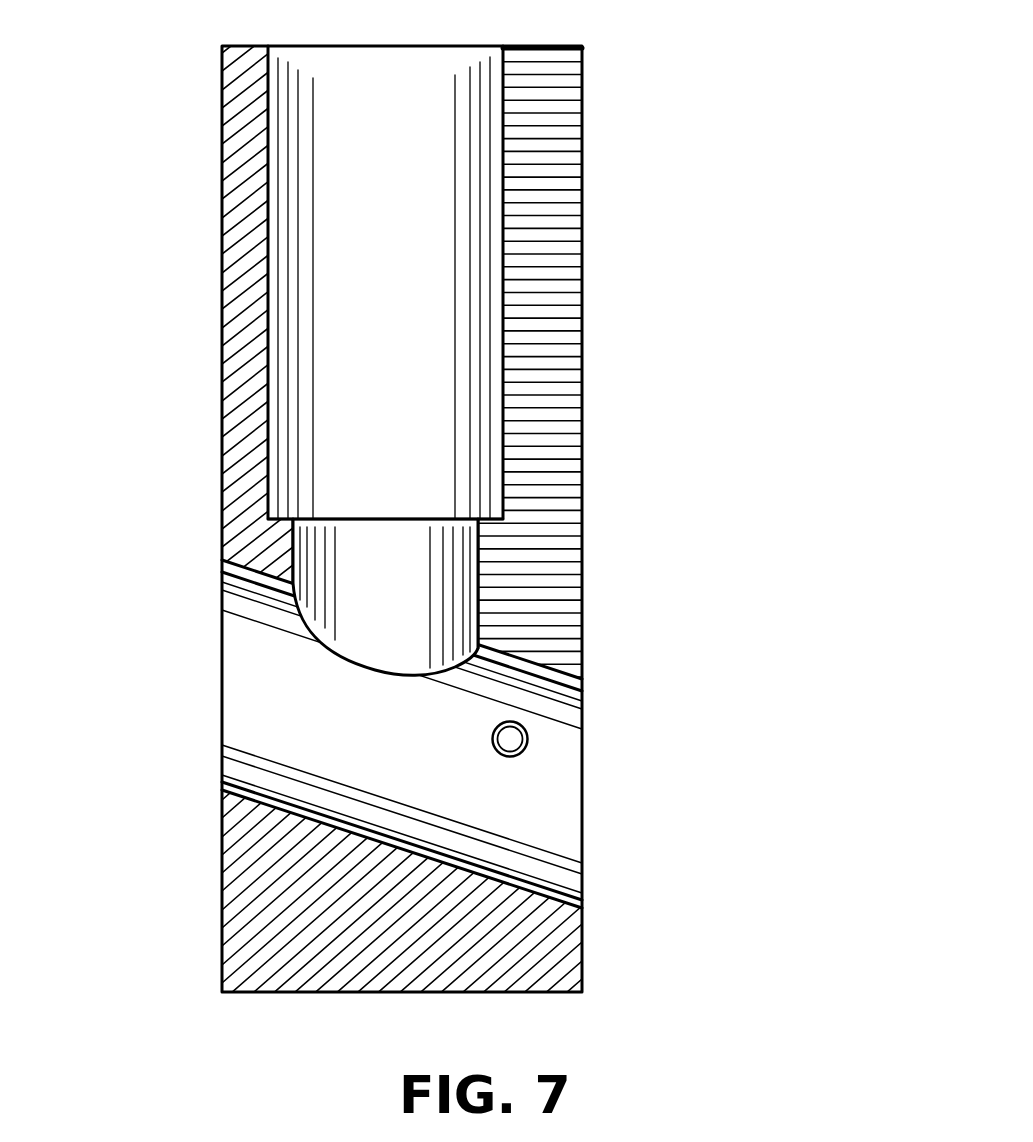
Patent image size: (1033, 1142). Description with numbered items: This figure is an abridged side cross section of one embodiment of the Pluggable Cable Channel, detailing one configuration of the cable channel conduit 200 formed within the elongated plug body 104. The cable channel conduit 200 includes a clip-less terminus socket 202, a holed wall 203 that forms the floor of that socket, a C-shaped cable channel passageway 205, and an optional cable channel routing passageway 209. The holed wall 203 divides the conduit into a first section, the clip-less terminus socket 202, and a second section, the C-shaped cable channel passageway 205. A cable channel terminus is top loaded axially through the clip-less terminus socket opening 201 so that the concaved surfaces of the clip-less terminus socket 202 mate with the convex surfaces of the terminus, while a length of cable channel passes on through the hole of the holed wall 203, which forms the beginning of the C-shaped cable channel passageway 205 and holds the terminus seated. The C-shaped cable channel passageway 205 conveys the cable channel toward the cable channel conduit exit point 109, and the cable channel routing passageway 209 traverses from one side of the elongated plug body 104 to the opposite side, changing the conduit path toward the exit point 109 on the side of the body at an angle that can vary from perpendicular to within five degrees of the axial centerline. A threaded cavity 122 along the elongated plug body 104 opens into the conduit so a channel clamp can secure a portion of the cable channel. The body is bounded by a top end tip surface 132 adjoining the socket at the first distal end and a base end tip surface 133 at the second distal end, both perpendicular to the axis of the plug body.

The elongated plug body 104 is at (222, 450).
The cable channel conduit exit point 109 is at (582, 797).
The threaded cavity 122 is at (510, 757).
The top end tip surface 132 is at (242, 46).
The base end tip surface 133 is at (293, 993).
The cable channel conduit 200 is at (575, 372).
The clip-less terminus socket opening 201 is at (383, 78).
The clip-less terminus socket 202 is at (383, 303).
The holed wall 203 is at (447, 517).
The C-shaped cable channel passageway 205 is at (383, 562).
The cable channel routing passageway 209 is at (368, 725).